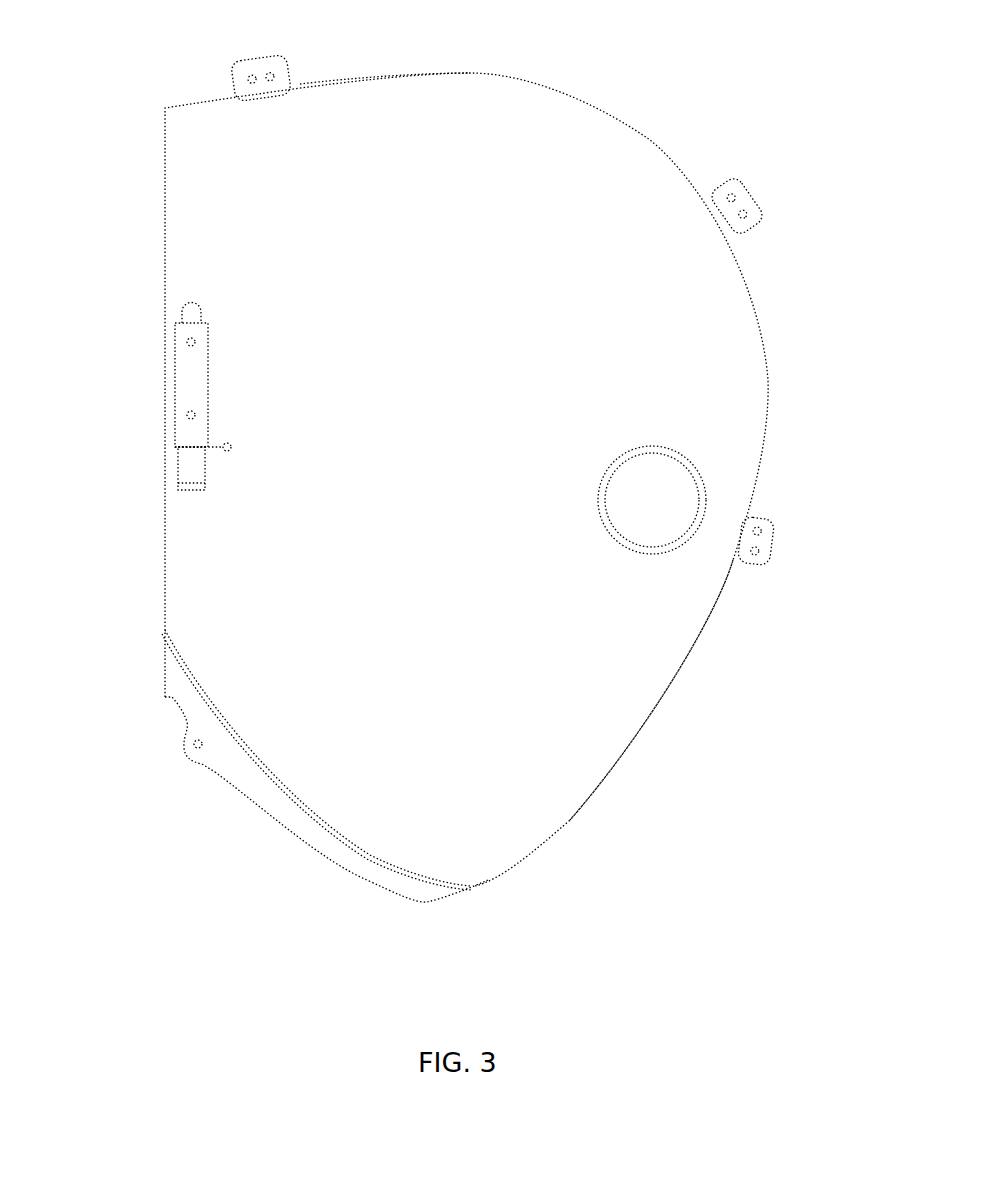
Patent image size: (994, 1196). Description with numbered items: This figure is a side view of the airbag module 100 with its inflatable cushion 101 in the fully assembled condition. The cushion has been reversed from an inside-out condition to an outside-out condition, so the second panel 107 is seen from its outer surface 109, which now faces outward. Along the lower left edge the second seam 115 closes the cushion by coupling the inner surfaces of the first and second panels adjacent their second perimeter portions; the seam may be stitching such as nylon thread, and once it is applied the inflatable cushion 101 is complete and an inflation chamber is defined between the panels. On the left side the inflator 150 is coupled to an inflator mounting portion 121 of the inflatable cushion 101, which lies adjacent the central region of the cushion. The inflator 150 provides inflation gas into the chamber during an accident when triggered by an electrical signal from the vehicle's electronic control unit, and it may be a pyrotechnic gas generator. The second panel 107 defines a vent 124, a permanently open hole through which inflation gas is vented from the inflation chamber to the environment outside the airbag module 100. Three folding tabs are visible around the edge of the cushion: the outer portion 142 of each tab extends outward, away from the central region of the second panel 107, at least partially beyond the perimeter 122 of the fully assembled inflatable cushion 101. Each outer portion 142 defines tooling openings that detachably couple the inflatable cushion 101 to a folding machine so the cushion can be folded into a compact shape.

The airbag module 100 is at (288, 892).
The inflatable cushion 101 is at (590, 96).
The second panel 107 is at (490, 760).
The outer surface 109 is at (457, 120).
The second seam 115 is at (248, 762).
The inflator mounting portion 121 is at (168, 448).
The perimeter 122 is at (663, 703).
The vent 124 is at (670, 485).
The outer portion 142 is at (250, 65).
The inflator 150 is at (193, 470).